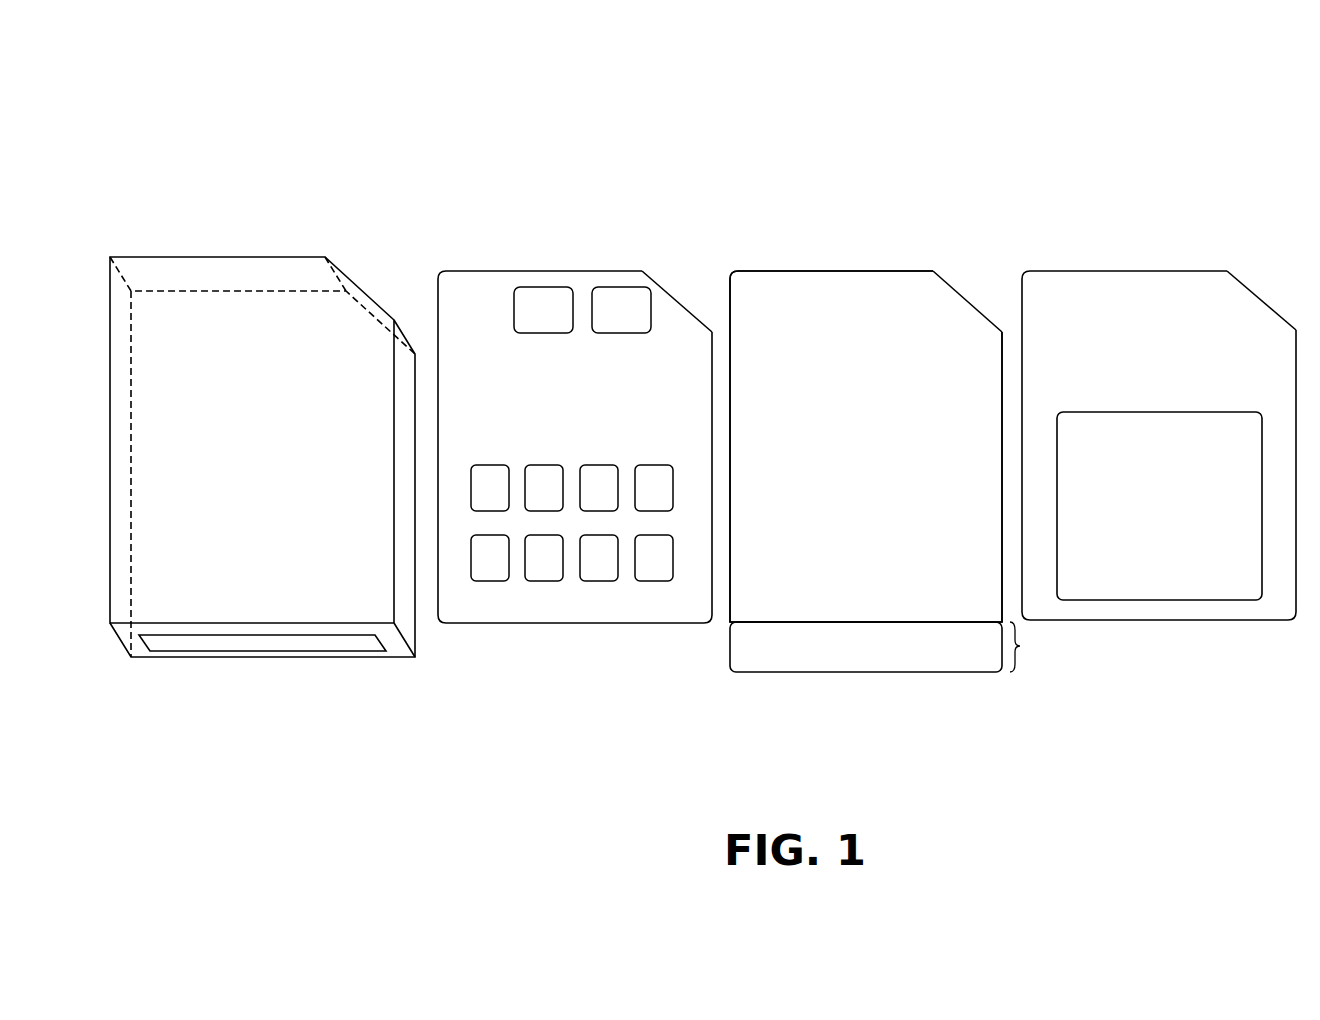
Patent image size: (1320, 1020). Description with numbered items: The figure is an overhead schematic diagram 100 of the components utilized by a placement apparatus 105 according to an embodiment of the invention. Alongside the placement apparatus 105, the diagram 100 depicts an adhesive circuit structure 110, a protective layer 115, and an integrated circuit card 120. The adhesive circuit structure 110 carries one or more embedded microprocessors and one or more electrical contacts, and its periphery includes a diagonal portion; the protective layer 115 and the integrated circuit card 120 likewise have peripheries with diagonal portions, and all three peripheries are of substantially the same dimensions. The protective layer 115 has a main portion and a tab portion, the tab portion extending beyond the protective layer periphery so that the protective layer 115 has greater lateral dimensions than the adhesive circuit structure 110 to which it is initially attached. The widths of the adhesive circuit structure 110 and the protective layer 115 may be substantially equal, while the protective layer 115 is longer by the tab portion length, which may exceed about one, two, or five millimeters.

The overhead schematic diagram 100 is at (183, 727).
The placement apparatus 105 is at (240, 256).
The adhesive circuit structure 110 is at (566, 270).
The protective layer 115 is at (850, 270).
The integrated circuit card 120 is at (1136, 270).